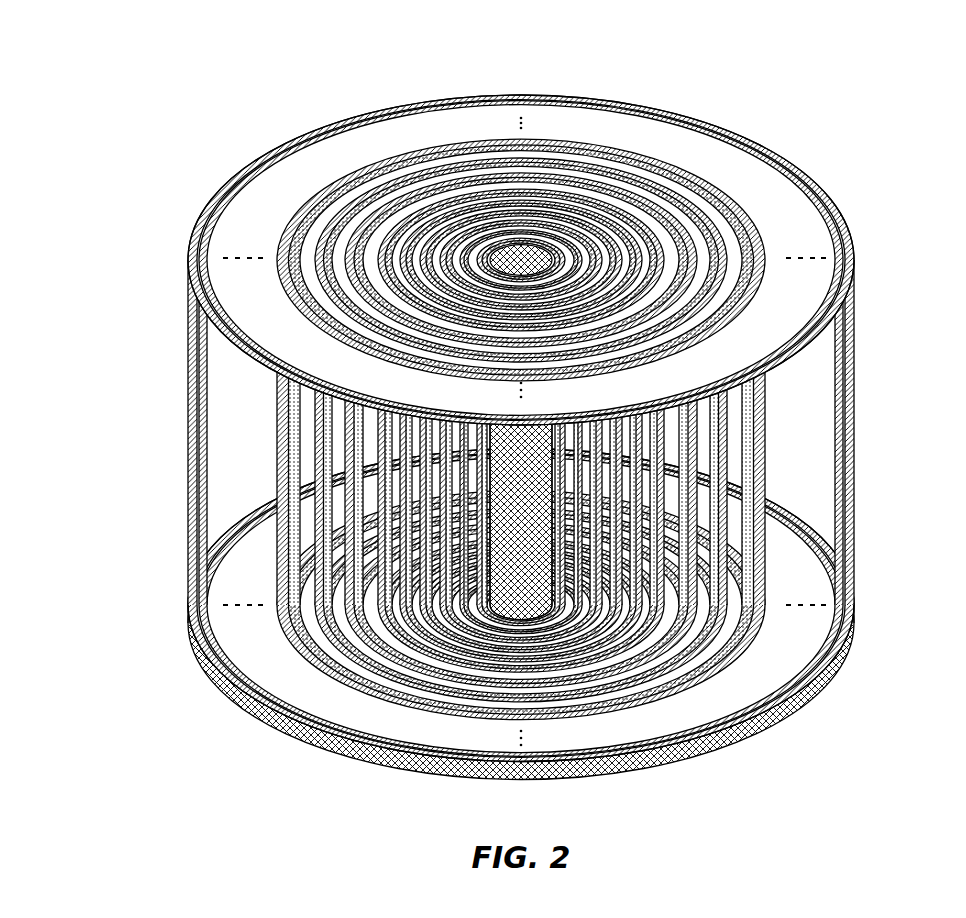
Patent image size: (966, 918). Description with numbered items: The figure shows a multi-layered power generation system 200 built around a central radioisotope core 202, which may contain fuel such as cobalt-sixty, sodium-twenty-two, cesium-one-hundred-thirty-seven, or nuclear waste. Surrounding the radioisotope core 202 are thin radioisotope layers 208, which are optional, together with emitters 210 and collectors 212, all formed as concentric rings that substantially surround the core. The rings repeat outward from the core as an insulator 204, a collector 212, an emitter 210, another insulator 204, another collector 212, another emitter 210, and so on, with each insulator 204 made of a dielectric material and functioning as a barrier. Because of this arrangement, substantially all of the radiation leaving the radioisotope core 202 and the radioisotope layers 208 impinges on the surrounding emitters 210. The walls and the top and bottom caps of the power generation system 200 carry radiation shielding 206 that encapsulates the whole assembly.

The power generation system 200 is at (699, 80).
The radioisotope core 202 is at (522, 585).
The insulator 204 is at (323, 630).
The radiation shielding 206 is at (187, 520).
The radioisotope layer 208 is at (592, 262).
The emitter 210 is at (320, 570).
The collector 212 is at (765, 440).